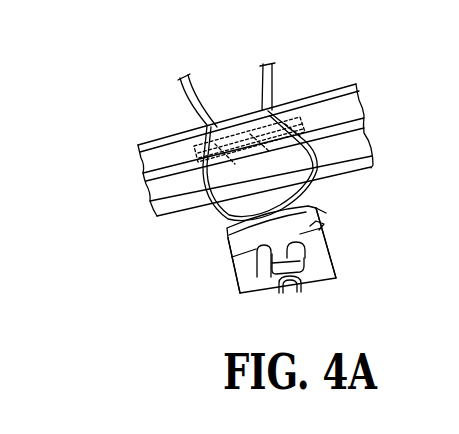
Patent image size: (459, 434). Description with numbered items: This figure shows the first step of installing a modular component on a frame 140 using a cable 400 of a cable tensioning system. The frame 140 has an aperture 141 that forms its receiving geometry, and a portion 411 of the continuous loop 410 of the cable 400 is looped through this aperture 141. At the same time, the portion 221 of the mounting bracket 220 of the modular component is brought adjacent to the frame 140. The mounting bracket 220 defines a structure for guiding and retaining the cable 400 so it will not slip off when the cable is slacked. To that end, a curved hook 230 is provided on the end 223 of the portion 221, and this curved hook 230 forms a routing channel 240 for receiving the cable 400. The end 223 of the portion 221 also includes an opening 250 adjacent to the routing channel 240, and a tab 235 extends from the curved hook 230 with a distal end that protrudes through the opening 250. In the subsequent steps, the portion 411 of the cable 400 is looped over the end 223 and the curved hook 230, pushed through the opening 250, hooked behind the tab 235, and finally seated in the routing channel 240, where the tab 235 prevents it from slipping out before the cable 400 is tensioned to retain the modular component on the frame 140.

The frame 140 is at (173, 153).
The aperture 141 is at (241, 120).
The continuous loop 410 is at (322, 140).
The portion of the continuous loop 411 is at (322, 210).
The end of the portion 223 is at (333, 209).
The routing channel 240 is at (322, 222).
The tab 235 is at (306, 259).
The portion of the mounting bracket 221 is at (333, 270).
The mounting bracket 220 is at (331, 291).
The curved hook 230 is at (219, 249).
The opening 250 is at (262, 278).
The cable 400 is at (192, 198).